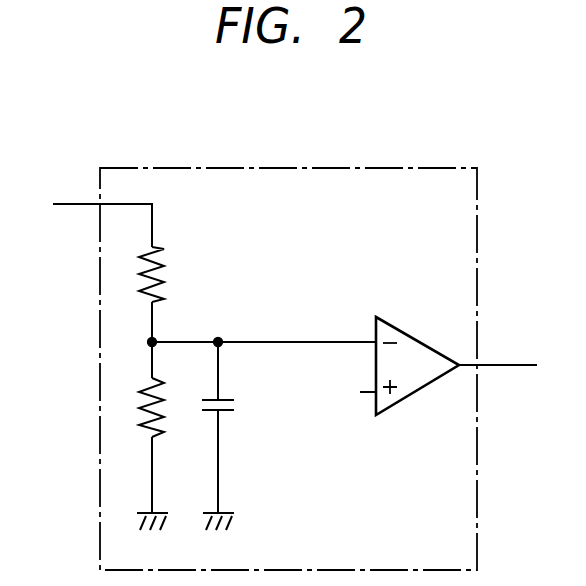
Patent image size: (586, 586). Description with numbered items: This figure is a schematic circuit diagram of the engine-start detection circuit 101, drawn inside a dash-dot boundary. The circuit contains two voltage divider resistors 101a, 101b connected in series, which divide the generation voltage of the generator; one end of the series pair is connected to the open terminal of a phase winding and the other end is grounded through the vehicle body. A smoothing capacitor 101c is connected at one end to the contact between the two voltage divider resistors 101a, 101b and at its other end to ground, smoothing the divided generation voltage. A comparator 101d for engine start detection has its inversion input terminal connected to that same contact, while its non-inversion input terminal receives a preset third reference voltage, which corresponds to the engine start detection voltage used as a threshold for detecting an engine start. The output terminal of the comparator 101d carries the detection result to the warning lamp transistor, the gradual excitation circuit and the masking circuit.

The engine-start detection circuit 101 is at (275, 166).
The voltage divider resistor 101a is at (166, 275).
The voltage divider resistor 101b is at (142, 398).
The smoothing capacitor 101c is at (228, 412).
The comparator for engine start detection 101d is at (411, 336).